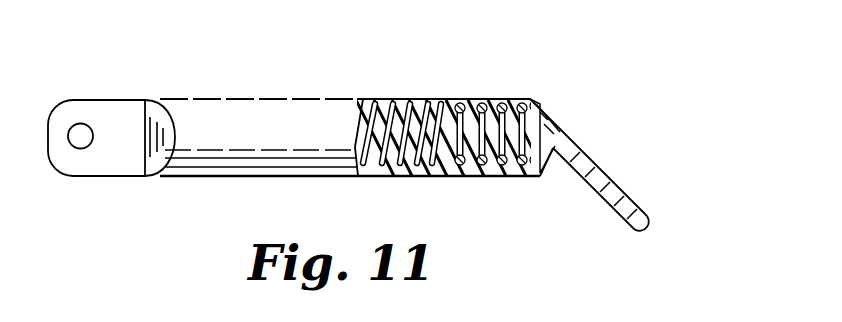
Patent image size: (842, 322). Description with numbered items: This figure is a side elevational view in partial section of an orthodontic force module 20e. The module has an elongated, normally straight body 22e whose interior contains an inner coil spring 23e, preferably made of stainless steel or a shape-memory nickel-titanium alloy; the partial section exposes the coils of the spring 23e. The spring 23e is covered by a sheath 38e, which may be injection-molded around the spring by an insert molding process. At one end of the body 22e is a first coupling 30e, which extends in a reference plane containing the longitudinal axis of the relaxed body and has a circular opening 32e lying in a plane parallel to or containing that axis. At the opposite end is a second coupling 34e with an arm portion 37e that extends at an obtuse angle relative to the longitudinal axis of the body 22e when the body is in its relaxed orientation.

The orthodontic force module 20e is at (502, 54).
The body 22e is at (270, 95).
The inner coil spring 23e is at (428, 150).
The first coupling 30e is at (106, 166).
The circular opening 32e is at (78, 127).
The second coupling 34e is at (588, 183).
The arm portion 37e is at (571, 150).
The sheath 38e is at (245, 157).